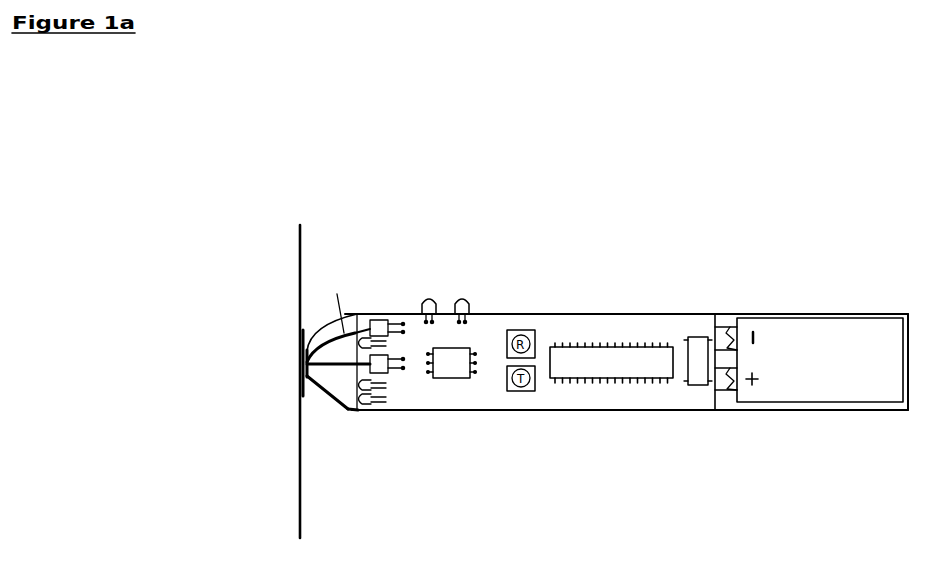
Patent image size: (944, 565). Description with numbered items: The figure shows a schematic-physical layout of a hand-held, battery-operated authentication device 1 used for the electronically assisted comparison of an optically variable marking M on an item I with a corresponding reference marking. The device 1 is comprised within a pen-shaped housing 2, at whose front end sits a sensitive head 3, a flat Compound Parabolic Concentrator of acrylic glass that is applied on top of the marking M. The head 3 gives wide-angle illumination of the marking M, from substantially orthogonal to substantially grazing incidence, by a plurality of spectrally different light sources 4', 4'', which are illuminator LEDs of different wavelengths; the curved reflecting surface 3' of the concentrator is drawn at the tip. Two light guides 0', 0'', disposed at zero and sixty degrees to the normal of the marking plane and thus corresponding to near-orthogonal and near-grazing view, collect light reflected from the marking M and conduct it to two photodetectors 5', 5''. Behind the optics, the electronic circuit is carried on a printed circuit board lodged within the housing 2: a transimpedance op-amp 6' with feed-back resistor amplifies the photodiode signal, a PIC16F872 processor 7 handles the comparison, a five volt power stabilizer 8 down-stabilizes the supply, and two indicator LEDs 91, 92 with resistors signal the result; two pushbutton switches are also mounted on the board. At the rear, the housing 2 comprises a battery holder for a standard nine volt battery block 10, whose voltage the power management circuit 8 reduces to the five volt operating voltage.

The item I is at (302, 222).
The optically variable marking M is at (301, 372).
The authentication device 1 is at (733, 278).
The pen-shaped housing 2 is at (582, 314).
The sensitive head 3 is at (332, 372).
The curved mirror surface 3' is at (338, 328).
The light guide 0' is at (338, 417).
The light guide 0'' is at (338, 305).
The light source 4' is at (373, 415).
The light source 4'' is at (382, 396).
The photodetector 5' is at (401, 402).
The photodetector 5'' is at (387, 303).
The transimpedance op-amp 6' is at (452, 363).
The processor 7 is at (611, 363).
The power stabilizer 8 is at (698, 361).
The indicator LED 91 is at (429, 300).
The indicator LED 92 is at (462, 300).
The 9V battery block 10 is at (808, 388).